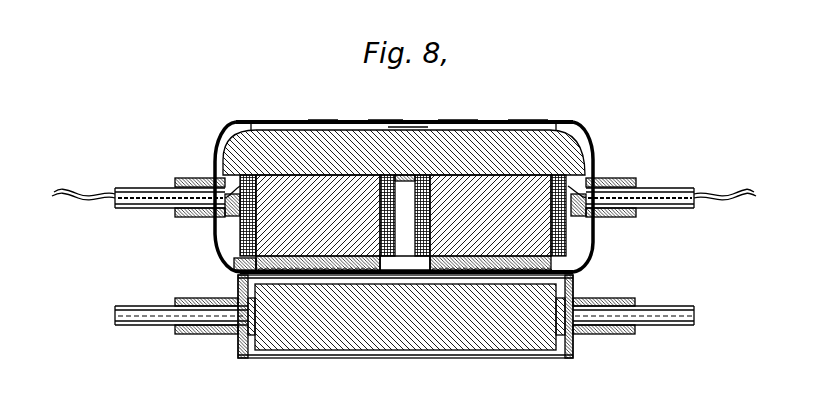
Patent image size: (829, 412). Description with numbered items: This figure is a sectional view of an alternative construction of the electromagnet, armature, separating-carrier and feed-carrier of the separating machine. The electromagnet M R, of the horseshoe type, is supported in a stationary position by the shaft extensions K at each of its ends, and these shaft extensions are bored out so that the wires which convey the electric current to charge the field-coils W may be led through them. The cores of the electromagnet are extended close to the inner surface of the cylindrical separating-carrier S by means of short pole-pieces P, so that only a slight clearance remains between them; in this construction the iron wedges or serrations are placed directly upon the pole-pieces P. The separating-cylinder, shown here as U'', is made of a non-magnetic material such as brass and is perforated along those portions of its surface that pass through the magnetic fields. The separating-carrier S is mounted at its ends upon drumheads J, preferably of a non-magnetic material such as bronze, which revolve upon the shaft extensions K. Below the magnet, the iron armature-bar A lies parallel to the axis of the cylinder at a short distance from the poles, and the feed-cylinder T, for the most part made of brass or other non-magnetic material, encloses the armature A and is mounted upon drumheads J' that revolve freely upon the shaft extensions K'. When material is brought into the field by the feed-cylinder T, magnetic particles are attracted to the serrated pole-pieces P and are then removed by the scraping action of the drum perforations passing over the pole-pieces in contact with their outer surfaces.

The field-coil W is at (403, 195).
The shaft extension K is at (404, 186).
The drumhead J is at (405, 186).
The electromagnet M is at (323, 110).
The separating-carrier S is at (346, 116).
The shell top U'' is at (408, 109).
The pole-piece P is at (228, 257).
The electromagnet core R is at (403, 222).
The armature A is at (406, 317).
The shaft extension K' is at (404, 331).
The drumhead J' is at (405, 330).
The feed-cylinder T is at (412, 350).